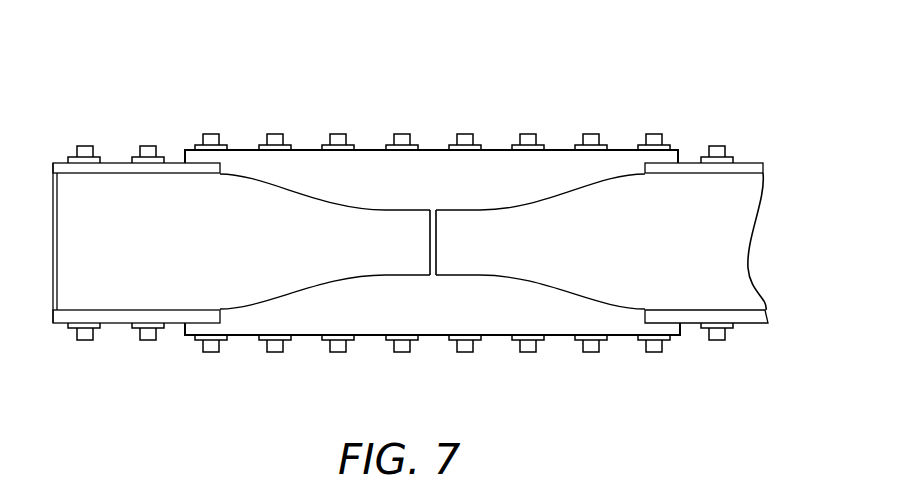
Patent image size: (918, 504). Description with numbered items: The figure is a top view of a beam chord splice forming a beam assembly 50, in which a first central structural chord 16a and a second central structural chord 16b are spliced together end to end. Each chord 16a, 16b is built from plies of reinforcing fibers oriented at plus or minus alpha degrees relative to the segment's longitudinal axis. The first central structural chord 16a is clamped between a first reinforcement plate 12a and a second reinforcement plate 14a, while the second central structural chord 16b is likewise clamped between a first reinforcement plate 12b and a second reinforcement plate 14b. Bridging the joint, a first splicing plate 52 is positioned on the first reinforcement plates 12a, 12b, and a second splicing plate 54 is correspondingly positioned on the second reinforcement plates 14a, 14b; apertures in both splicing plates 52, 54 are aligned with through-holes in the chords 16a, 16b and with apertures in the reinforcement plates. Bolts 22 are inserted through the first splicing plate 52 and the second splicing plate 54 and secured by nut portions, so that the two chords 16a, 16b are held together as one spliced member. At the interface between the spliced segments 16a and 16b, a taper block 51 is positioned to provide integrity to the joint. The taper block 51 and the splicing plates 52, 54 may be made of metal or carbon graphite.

The beam assembly 50 is at (740, 92).
The bolts 22 is at (83, 146).
The second reinforcement plate 14a is at (111, 162).
The second reinforcement plate 14b is at (743, 162).
The first reinforcement plate 12a is at (117, 325).
The first reinforcement plate 12b is at (745, 325).
The first central structural chord 16a is at (203, 258).
The second central structural chord 16b is at (698, 258).
The taper block 51 is at (437, 242).
The second splicing plate 54 is at (433, 150).
The first splicing plate 52 is at (434, 335).